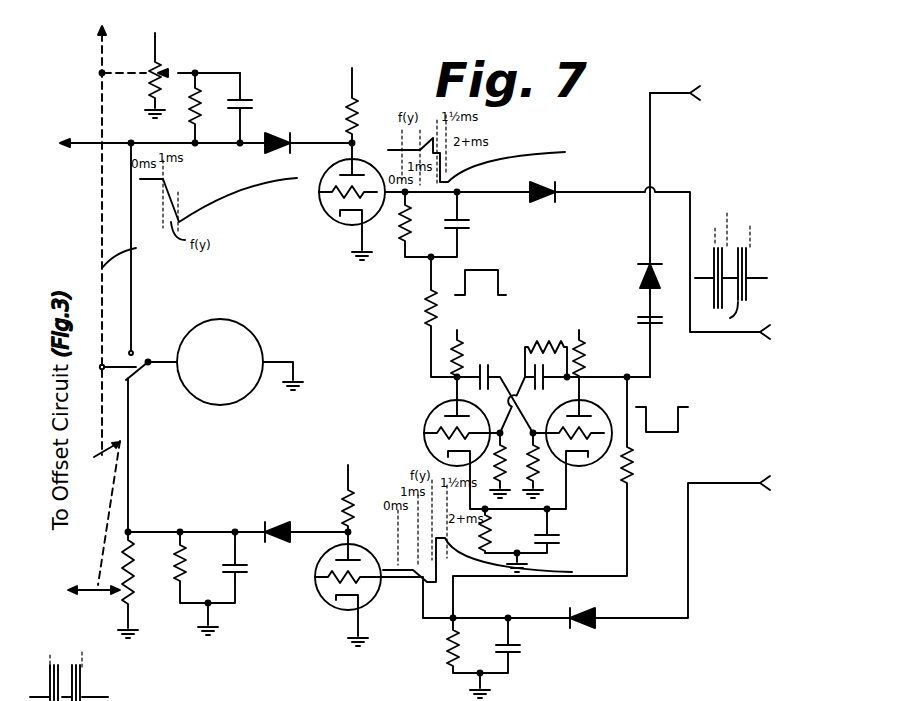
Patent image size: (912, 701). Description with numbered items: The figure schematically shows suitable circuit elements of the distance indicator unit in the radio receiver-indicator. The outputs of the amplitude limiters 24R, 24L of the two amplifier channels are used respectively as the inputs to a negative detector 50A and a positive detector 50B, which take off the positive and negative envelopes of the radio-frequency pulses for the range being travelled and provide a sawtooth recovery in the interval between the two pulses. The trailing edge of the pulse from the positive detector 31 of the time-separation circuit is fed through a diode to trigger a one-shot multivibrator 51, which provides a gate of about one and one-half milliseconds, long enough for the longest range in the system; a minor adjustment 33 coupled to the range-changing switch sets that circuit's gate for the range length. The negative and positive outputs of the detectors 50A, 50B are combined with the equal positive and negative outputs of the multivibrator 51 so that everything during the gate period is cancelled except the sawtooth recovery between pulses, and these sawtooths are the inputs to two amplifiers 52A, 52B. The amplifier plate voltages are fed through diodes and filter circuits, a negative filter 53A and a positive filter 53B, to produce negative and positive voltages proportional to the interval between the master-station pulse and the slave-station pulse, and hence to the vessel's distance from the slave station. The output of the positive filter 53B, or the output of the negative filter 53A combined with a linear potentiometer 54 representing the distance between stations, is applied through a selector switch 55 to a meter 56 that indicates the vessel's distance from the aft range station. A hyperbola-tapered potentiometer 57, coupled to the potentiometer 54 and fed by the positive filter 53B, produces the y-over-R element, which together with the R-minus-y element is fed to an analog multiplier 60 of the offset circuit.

The amplitude limiter 24R is at (754, 270).
The amplitude limiter 24L is at (639, 489).
The positive detector 31 is at (738, 219).
The minor adjustment 33 is at (91, 298).
The negative detector 50A is at (572, 279).
The positive detector 50B is at (498, 657).
The one-shot multivibrator 51 is at (537, 441).
The amplifier 52A is at (325, 153).
The amplifier 52B is at (354, 545).
The negative filter 53A is at (228, 92).
The positive filter 53B is at (210, 572).
The linear potentiometer 54 is at (162, 64).
The selector switch 55 is at (127, 376).
The meter 56 is at (264, 348).
The hyperbola-tapered potentiometer 57 is at (129, 592).
The analog multiplier 60 is at (147, 417).